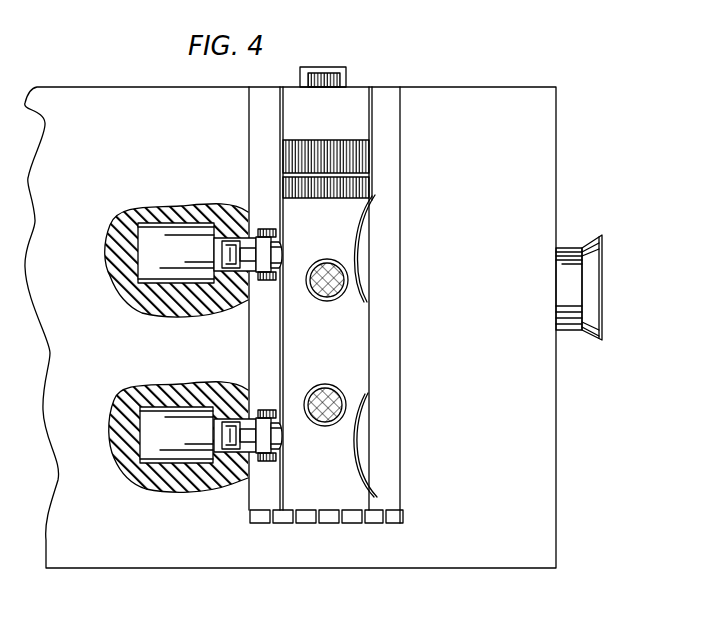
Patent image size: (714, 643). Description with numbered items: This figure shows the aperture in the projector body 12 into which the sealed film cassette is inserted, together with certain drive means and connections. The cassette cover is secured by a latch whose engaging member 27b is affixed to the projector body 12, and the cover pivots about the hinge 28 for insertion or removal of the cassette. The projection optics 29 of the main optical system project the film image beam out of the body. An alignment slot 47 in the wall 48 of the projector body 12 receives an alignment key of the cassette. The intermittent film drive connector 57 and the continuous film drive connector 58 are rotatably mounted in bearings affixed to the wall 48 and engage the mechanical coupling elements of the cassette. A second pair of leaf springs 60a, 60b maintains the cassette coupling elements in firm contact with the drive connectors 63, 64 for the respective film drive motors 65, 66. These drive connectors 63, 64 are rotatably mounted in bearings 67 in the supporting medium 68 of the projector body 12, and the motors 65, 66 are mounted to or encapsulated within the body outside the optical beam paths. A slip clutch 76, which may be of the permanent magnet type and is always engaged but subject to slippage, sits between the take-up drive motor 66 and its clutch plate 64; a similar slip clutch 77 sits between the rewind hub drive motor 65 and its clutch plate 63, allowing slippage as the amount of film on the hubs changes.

The projector body 12 is at (496, 87).
The engaging member 27b is at (343, 67).
The hinge 28 is at (348, 523).
The projection optics 29 is at (593, 287).
The alignment slot 47 is at (360, 190).
The wall 48 is at (362, 341).
The intermittent film drive connector 57 is at (327, 262).
The continuous film drive connector 58 is at (325, 385).
The leaf spring 60a is at (365, 250).
The leaf spring 60b is at (365, 442).
The drive connector 63 is at (283, 262).
The drive connector 64 is at (283, 440).
The film drive motor 65 is at (190, 235).
The film drive motor 66 is at (162, 392).
The bearings 67 is at (283, 231).
The supporting medium 68 is at (218, 306).
The slip clutch 76 is at (228, 243).
The slip clutch 77 is at (232, 452).